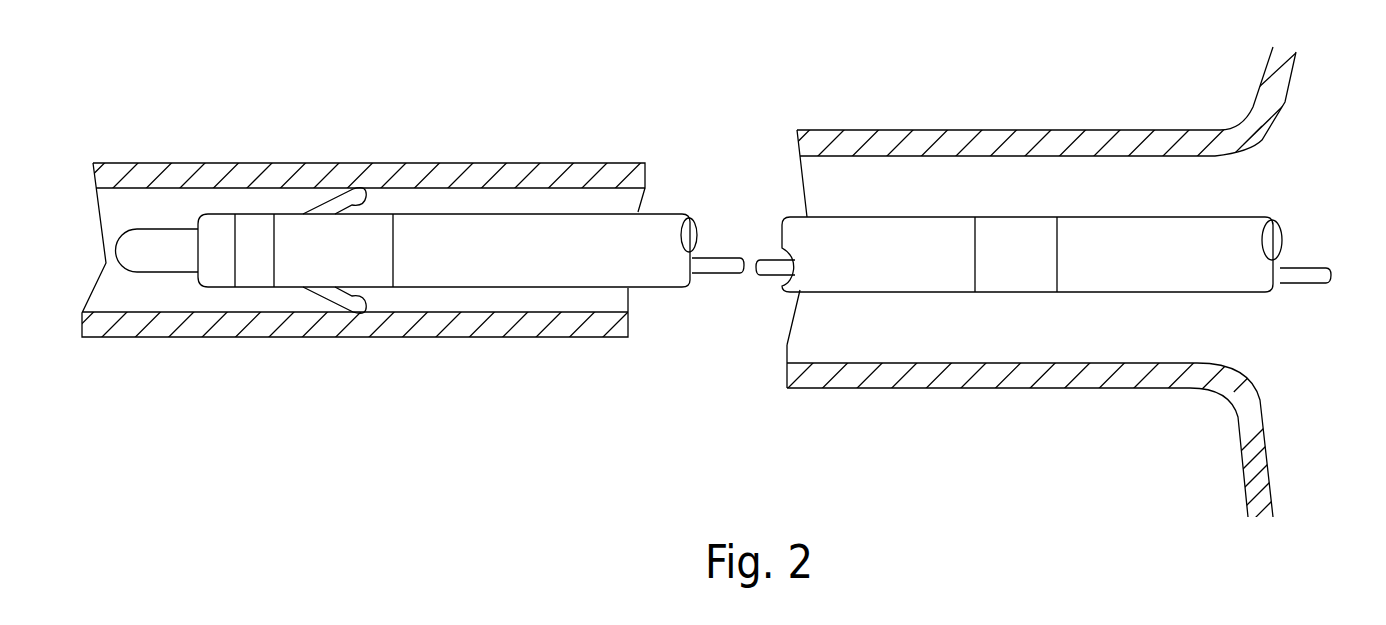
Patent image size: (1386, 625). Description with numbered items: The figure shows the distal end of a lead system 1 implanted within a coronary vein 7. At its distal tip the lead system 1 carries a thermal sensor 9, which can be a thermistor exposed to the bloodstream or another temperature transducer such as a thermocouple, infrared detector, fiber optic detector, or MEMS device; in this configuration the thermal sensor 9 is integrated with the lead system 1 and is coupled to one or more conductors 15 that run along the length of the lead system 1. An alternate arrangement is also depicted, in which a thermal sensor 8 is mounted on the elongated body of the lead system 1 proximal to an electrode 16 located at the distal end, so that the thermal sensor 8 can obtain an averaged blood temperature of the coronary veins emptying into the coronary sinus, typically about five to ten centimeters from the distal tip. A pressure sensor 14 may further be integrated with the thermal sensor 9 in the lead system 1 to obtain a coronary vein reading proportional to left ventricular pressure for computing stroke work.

The lead system 1 is at (682, 332).
The coronary vein 7 is at (242, 163).
The thermal sensor 8 is at (1012, 217).
The thermal sensor 9 is at (137, 275).
The pressure sensor 14 is at (1267, 352).
The conductors 15 is at (723, 255).
The electrode 16 is at (263, 288).